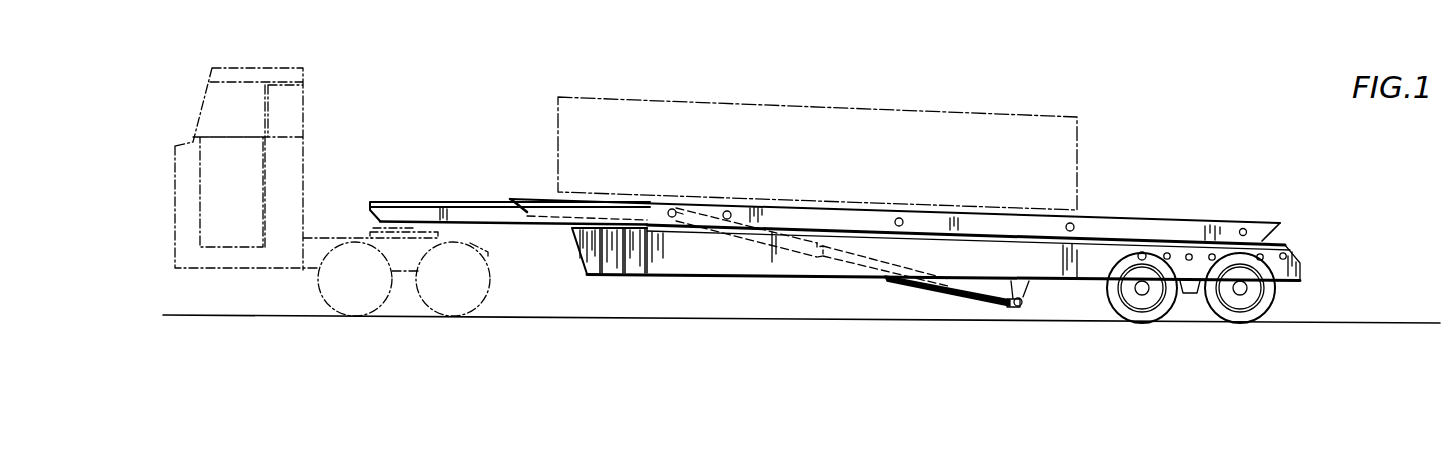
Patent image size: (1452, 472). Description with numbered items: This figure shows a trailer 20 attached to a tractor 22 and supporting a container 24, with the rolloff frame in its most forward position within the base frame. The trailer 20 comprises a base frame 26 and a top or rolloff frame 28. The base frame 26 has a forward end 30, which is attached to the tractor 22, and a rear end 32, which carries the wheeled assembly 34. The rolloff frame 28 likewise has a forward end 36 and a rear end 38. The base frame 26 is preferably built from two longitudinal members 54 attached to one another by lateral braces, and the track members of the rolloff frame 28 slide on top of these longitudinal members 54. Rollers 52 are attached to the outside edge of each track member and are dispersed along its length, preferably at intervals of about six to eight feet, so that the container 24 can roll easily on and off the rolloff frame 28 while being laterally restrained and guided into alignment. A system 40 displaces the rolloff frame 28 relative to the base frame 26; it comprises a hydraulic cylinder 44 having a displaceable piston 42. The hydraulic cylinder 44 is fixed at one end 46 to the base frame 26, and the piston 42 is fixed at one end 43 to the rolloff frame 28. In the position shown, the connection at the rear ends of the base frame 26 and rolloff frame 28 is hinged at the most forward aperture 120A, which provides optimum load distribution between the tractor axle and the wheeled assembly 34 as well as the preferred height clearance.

The trailer 20 is at (433, 143).
The tractor 22 is at (318, 65).
The container 24 is at (833, 108).
The base frame 26 is at (710, 263).
The rolloff frame 28 is at (1110, 228).
The forward end 30 is at (480, 202).
The rear end 32 is at (1095, 265).
The wheeled assembly 34 is at (1182, 306).
The forward end 36 is at (550, 198).
The rear end 38 is at (1227, 222).
The system 40 is at (940, 292).
The piston 42 is at (793, 248).
The end 43 is at (677, 208).
The hydraulic cylinder 44 is at (997, 305).
The end 46 is at (1025, 301).
The rollers 52 is at (730, 211).
The longitudinal members 54 is at (667, 255).
The most forward aperture 120A is at (1143, 253).